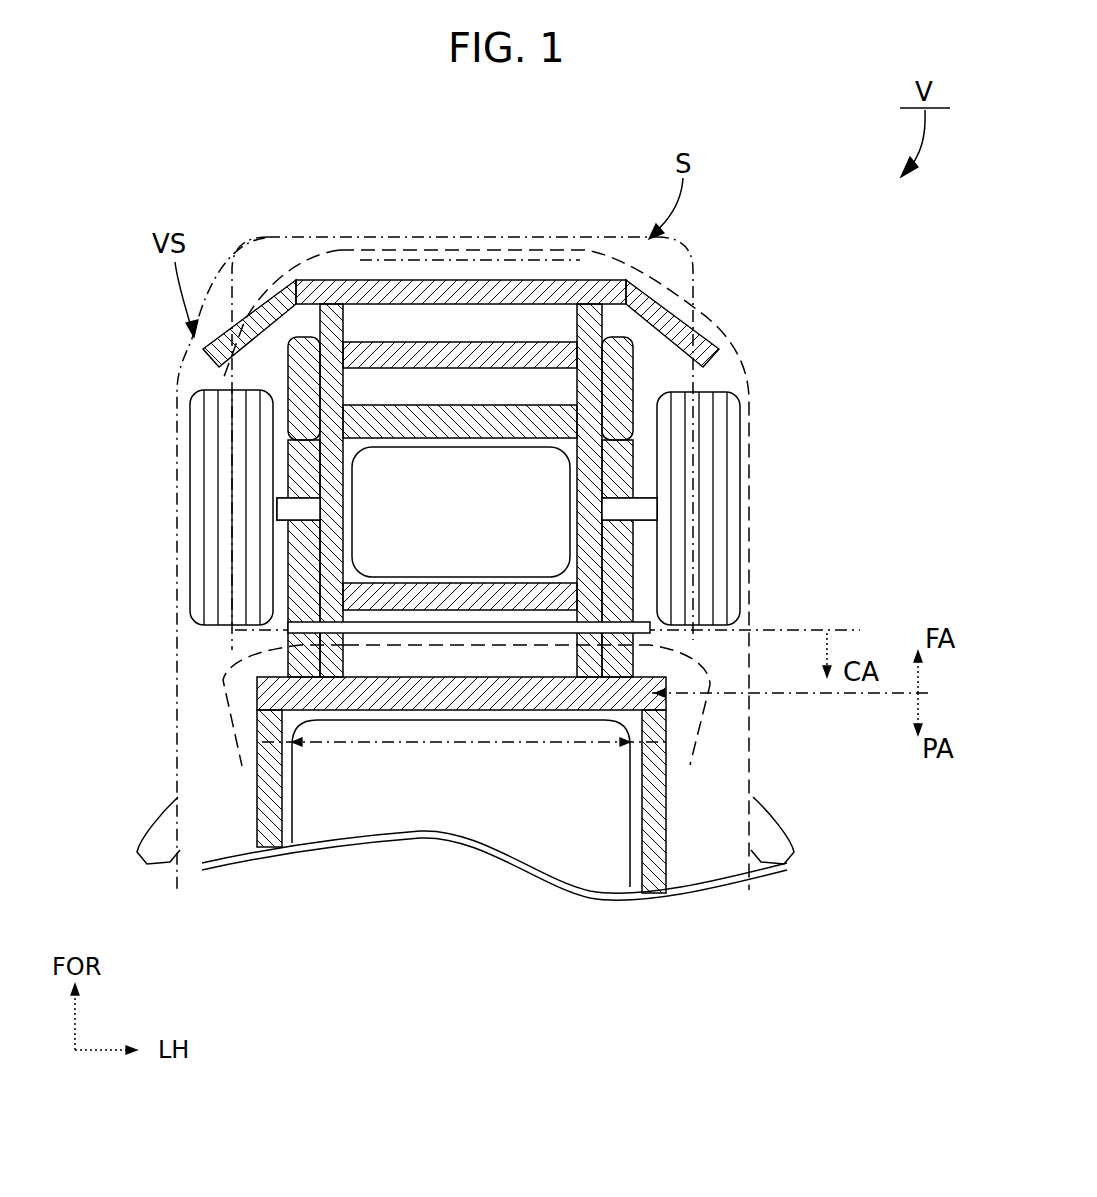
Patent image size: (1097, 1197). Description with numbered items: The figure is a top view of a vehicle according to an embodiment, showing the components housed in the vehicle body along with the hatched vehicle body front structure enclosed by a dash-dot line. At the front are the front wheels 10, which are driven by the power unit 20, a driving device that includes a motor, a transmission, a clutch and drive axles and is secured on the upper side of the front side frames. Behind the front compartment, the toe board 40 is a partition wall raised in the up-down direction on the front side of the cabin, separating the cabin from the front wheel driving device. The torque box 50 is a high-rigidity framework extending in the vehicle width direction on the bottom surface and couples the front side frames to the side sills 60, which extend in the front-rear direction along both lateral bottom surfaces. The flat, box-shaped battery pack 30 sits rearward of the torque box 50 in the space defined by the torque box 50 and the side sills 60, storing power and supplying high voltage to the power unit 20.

The front wheels 10 is at (217, 442).
The power unit 20 is at (420, 530).
The battery pack 30 is at (418, 812).
The toe board 40 is at (295, 632).
The torque box 50 is at (467, 712).
The side sills 60 is at (270, 767).